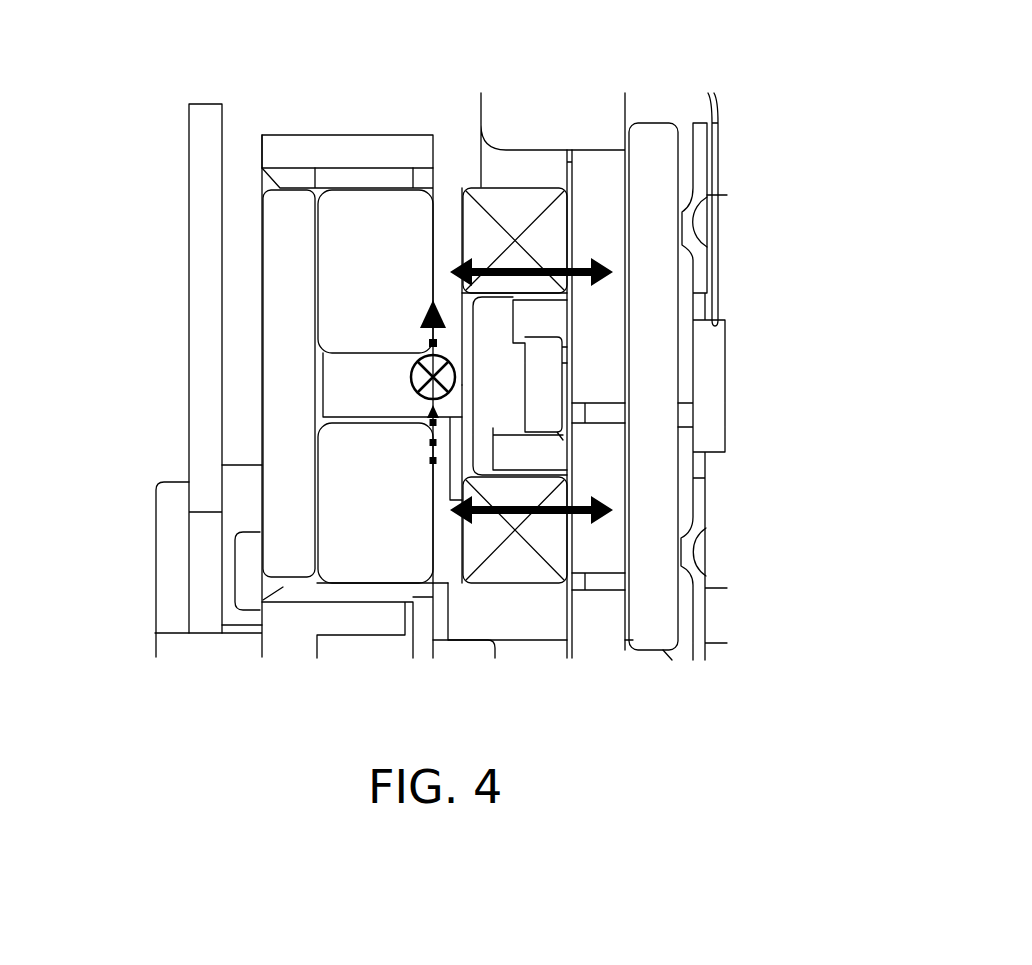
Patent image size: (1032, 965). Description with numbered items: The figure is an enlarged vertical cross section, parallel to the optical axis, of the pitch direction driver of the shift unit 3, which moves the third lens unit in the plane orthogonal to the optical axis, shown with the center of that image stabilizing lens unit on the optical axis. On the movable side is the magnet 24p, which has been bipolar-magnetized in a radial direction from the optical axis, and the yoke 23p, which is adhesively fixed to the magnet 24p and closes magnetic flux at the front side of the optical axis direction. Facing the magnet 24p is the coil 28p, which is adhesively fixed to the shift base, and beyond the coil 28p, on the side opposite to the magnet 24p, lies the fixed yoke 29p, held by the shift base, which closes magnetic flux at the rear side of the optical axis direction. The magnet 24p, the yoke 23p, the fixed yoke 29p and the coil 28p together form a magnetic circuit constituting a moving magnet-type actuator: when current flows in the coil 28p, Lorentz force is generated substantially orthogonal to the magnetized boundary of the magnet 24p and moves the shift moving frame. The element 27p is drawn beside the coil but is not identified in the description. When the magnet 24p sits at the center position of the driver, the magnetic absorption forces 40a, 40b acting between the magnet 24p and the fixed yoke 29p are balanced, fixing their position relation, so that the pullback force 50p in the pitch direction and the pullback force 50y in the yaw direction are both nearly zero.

The shift unit 3 is at (686, 66).
The yoke 23p is at (288, 253).
The magnet 24p is at (343, 315).
The inner core 27p is at (542, 383).
The coil 28p is at (540, 200).
The fixed yoke 29p is at (653, 598).
The magnetic absorption force 40a is at (466, 293).
The magnetic absorption force 40b is at (463, 487).
The pullback force in the yaw direction 50y is at (427, 385).
The pullback force in the pitch direction 50p is at (427, 423).